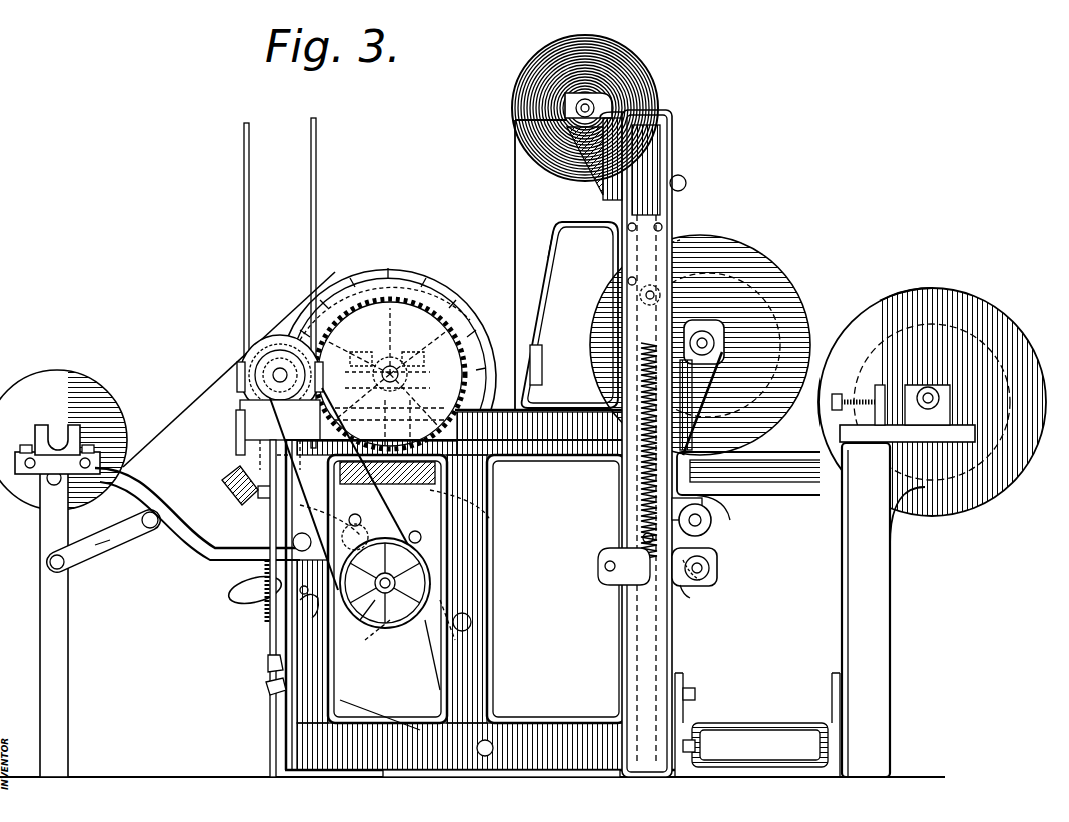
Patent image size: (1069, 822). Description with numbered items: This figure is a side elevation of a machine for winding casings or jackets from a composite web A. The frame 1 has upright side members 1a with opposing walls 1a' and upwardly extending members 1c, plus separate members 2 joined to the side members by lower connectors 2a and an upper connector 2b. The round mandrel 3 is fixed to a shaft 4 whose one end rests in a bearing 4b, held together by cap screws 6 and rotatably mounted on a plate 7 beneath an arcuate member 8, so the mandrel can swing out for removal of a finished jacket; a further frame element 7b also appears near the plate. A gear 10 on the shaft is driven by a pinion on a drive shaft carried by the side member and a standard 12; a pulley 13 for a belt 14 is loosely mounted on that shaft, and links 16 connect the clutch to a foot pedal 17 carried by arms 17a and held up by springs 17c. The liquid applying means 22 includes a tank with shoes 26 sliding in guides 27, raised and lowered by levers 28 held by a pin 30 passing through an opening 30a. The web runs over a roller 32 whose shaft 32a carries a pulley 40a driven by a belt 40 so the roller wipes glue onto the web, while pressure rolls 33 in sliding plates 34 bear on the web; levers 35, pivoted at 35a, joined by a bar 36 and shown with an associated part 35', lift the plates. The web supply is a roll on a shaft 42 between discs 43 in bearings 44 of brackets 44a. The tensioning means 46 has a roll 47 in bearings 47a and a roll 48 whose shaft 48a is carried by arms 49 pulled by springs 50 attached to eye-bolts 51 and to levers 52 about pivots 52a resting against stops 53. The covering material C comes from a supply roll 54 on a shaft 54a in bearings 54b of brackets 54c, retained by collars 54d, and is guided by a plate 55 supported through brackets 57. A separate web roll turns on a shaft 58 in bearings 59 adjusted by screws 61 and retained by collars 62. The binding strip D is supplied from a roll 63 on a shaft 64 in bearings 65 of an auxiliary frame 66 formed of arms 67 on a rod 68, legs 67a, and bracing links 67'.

The frame 1 is at (480, 608).
The upright side member 1a is at (556, 589).
The opposing wall of frame member 1a' is at (378, 590).
The upwardly extending frame member 1c is at (660, 158).
The separate frame member 2 is at (890, 696).
The lower connector 2a is at (725, 722).
The upper connector 2b is at (821, 481).
The mandrel 3 is at (440, 283).
The shaft 4 is at (355, 378).
The bearing 4b is at (425, 380).
The cap screw 6 is at (390, 374).
The plate 7 is at (390, 422).
The bolt 7b is at (680, 676).
The arcuate member 8 is at (455, 406).
The gear 10 is at (398, 300).
The standard 12 is at (250, 430).
The pulley 13 is at (252, 347).
The belt 14 is at (316, 232).
The link 16 is at (268, 605).
The foot pedal 17 is at (266, 683).
The arm 17a is at (372, 683).
The spring 17c is at (266, 655).
The liquid applying means 22 is at (466, 607).
The shoe 26 is at (440, 625).
The guide 27 is at (430, 670).
The lever 28 is at (240, 592).
The pin 30 is at (313, 611).
The opening 30a is at (268, 630).
The roller 32 is at (430, 578).
The roller shaft 32a is at (395, 583).
The pressure roll 33 is at (450, 527).
The plate 34 is at (455, 508).
The lever 35 is at (238, 479).
The roller 35' is at (351, 511).
The pivotal connection 35a is at (381, 537).
The bar 36 is at (750, 285).
The belt 40 is at (425, 500).
The pulley 40a is at (383, 639).
The shaft 42 is at (722, 356).
The end plate 43 is at (785, 288).
The bearing 44 is at (716, 340).
The bracket 44a is at (712, 403).
The tensioning means 46 is at (708, 556).
The roll 47 is at (712, 530).
The bearing 47a is at (732, 520).
The roll 48 is at (710, 572).
The shaft 48a is at (712, 585).
The arm 49 is at (692, 599).
The spring 50 is at (640, 470).
The eye-bolt 51 is at (620, 600).
The lever 52 is at (686, 184).
The pivot 52a is at (705, 242).
The stop 53 is at (627, 283).
The supply roll 54 is at (628, 62).
The shaft 54a is at (583, 160).
The bearing 54b is at (608, 98).
The bracket 54c is at (603, 180).
The adjustable collar 54d is at (640, 122).
The supporting plate 55 is at (542, 372).
The bracket 57 is at (572, 245).
The shaft 58 is at (922, 390).
The bearing 59 is at (948, 392).
The screw 61 is at (903, 413).
The collar 62 is at (927, 407).
The roll 63 is at (50, 380).
The shaft 64 is at (55, 428).
The bearing 65 is at (112, 425).
The auxiliary frame 66 is at (70, 615).
The arm 67 is at (197, 527).
The link 67' is at (104, 543).
The leg 67a is at (108, 575).
The rod 68 is at (290, 547).
The web A is at (694, 485).
The covering sheet material C is at (515, 178).
The binding strip D is at (215, 374).